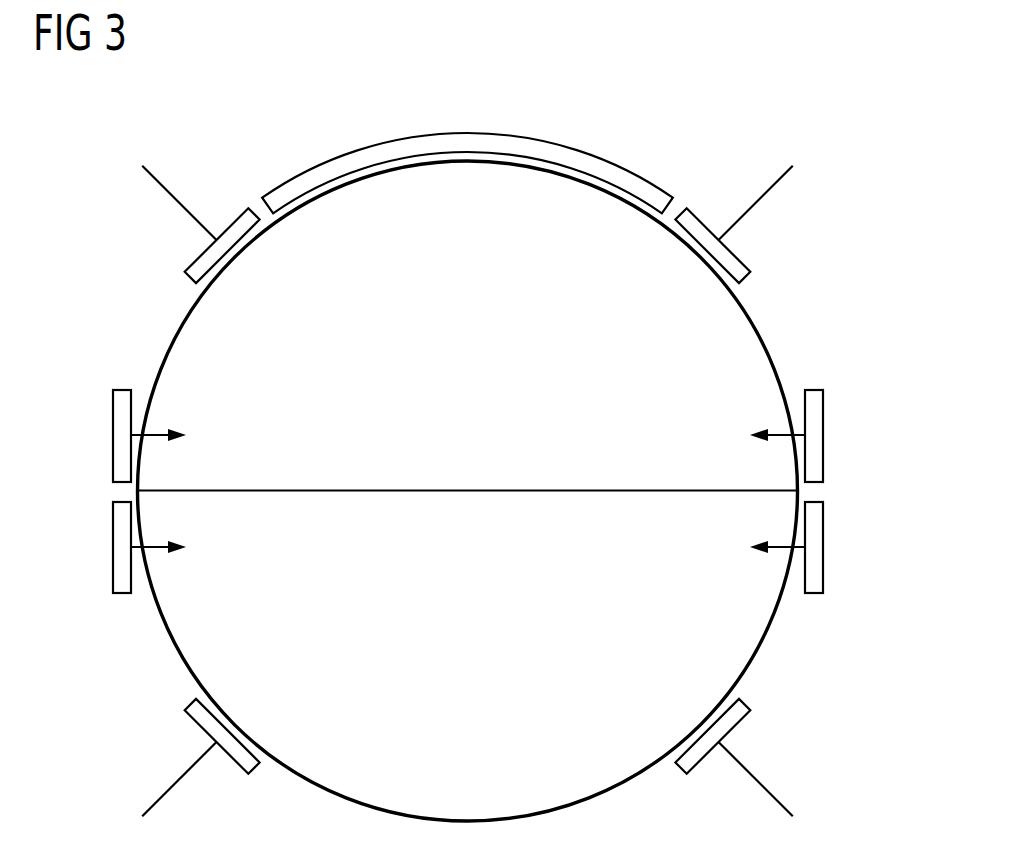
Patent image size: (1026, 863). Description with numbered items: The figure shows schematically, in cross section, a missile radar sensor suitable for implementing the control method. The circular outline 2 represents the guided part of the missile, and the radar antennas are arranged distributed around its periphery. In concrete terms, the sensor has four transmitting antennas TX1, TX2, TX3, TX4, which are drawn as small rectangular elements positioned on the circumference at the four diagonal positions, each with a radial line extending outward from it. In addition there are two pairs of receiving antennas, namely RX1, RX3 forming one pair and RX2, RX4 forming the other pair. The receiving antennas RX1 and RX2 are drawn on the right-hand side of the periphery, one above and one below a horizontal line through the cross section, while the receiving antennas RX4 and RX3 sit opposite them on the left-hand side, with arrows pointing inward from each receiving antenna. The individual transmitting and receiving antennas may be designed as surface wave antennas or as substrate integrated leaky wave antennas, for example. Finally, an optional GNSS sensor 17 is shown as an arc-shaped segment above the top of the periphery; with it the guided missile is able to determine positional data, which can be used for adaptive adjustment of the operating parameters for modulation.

The pipe / measuring tube 2 is at (763, 332).
The GNSS sensor 17 is at (450, 142).
The transmitting antenna TX1 is at (728, 258).
The transmitting antenna TX2 is at (725, 722).
The transmitting antenna TX3 is at (217, 732).
The transmitting antenna TX4 is at (205, 265).
The receiving antenna RX1 is at (813, 409).
The receiving antenna RX2 is at (813, 571).
The receiving antenna RX3 is at (122, 570).
The receiving antenna RX4 is at (122, 408).